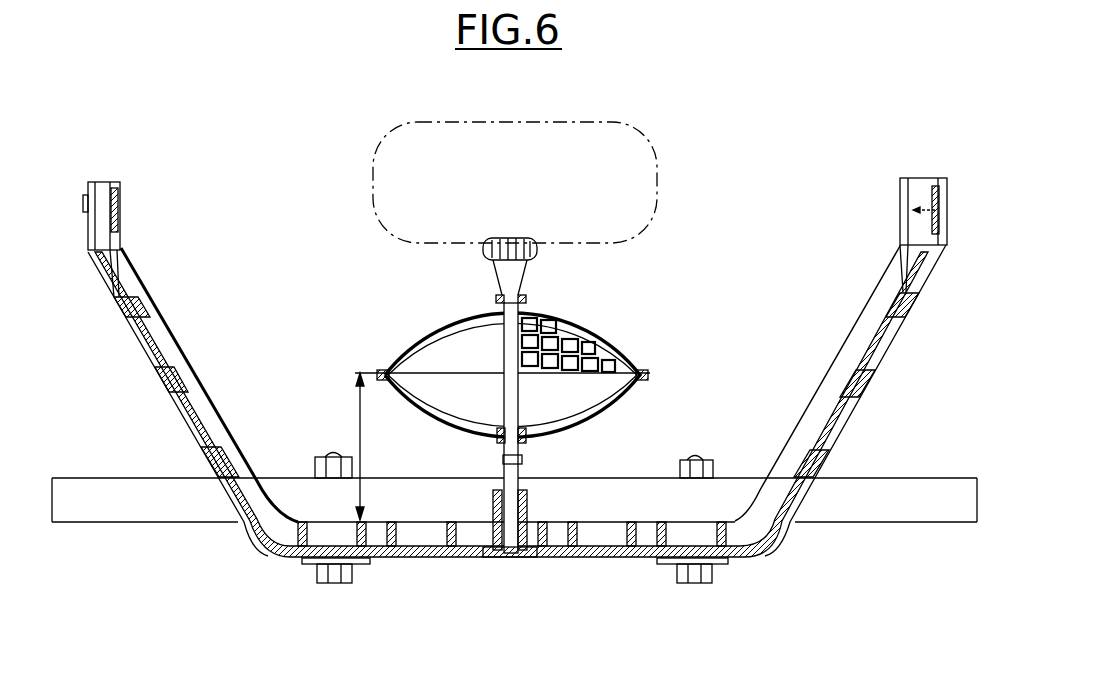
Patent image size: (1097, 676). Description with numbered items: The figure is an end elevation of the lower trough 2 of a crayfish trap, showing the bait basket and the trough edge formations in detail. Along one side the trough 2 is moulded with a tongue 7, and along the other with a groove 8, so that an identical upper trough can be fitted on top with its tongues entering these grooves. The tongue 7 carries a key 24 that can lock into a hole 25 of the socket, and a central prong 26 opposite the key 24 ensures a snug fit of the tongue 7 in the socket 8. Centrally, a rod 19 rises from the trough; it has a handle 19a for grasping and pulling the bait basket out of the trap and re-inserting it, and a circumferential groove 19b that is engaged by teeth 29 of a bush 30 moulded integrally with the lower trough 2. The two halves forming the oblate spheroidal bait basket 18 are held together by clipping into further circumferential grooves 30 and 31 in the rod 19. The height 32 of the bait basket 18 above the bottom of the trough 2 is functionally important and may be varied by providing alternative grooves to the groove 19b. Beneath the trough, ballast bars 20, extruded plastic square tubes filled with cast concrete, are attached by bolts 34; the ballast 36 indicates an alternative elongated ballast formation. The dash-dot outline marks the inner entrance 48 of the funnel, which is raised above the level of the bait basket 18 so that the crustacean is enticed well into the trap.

The lower trough 2 is at (148, 360).
The tongue 7 is at (108, 183).
The groove 8 is at (925, 183).
The bait basket 18 is at (606, 335).
The rod 19 is at (500, 273).
The handle 19a is at (540, 249).
The circumferential groove 19b is at (522, 478).
The ballast bar 20 is at (143, 492).
The key 24 is at (87, 205).
The hole 25 is at (946, 222).
The central prong 26 is at (120, 205).
The teeth 29 is at (497, 491).
The bush 30 is at (519, 302).
The circumferential groove 31 is at (498, 448).
The height 32 is at (357, 431).
The bolt 34 is at (700, 584).
The ballast 36 is at (330, 583).
The inner entrance 48 is at (373, 200).